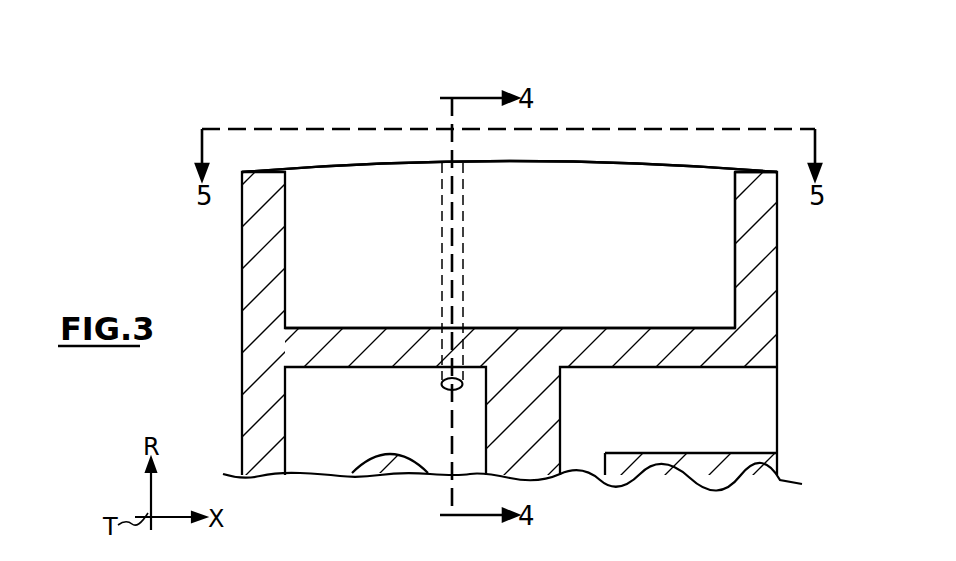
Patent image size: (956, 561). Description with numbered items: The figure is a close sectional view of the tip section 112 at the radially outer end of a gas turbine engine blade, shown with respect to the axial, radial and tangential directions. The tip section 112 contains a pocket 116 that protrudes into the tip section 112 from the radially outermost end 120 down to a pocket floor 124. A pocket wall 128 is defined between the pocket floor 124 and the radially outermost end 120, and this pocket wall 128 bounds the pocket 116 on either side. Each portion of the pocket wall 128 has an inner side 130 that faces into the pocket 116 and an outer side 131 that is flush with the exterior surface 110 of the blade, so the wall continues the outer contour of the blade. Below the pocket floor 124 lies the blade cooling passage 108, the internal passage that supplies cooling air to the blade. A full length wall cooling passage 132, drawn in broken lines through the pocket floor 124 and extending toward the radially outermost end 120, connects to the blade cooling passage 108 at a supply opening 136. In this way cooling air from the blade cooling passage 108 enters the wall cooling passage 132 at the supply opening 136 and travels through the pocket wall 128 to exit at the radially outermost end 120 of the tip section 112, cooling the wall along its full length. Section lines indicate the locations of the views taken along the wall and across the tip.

The blade cooling passage 108 is at (322, 413).
The exterior surface 110 is at (241, 390).
The tip section 112 is at (255, 94).
The pocket 116 is at (572, 271).
The radially outermost end 120 is at (592, 163).
The pocket floor 124 is at (668, 328).
The pocket wall 128 is at (752, 198).
The inner side 130 is at (735, 233).
The outer side 131 is at (241, 281).
The full length wall cooling passage 132 is at (466, 208).
The supply opening 136 is at (445, 390).